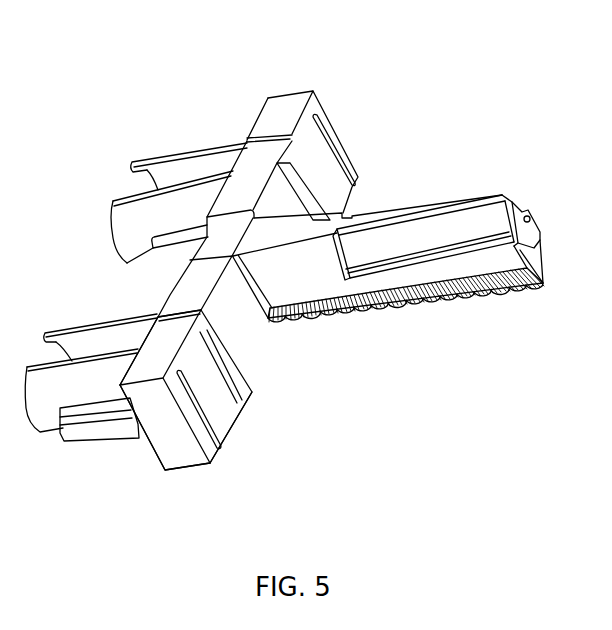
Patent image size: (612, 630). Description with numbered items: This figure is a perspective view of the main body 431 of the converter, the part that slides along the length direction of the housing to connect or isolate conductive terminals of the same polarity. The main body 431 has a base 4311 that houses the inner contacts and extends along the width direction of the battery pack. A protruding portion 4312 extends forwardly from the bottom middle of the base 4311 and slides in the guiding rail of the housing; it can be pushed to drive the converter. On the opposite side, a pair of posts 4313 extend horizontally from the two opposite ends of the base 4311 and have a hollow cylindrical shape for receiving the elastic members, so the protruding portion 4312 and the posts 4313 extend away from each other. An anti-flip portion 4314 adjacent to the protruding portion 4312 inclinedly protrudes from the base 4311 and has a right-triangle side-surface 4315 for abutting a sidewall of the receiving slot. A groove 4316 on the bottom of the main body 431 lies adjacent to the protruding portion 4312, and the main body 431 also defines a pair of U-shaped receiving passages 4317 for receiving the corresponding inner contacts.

The main body 431 is at (173, 435).
The base 4311 is at (287, 115).
The protruding portion 4312 is at (441, 212).
The post 4313 is at (51, 410).
The anti-flip portion 4314 is at (257, 350).
The right-triangle side-surface 4315 is at (270, 365).
The groove 4316 is at (300, 365).
The U-shaped receiving passage 4317 is at (215, 440).